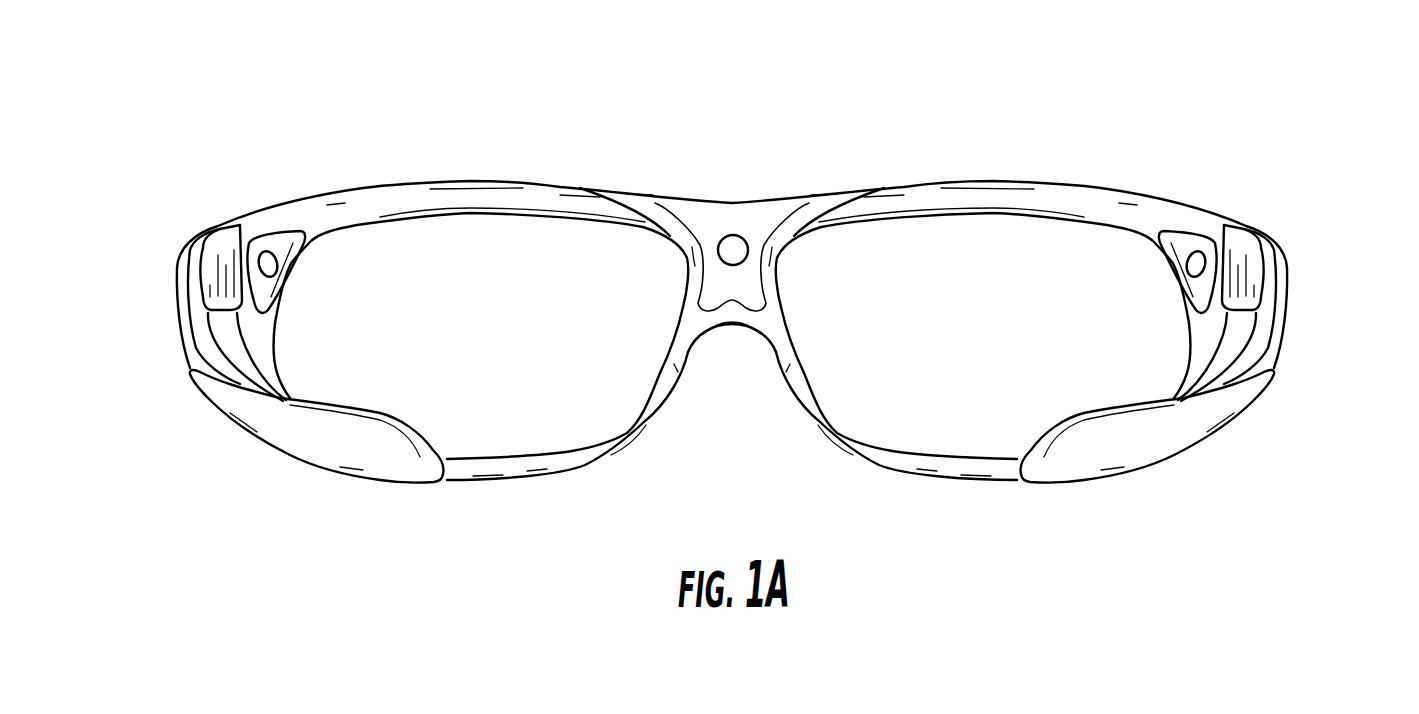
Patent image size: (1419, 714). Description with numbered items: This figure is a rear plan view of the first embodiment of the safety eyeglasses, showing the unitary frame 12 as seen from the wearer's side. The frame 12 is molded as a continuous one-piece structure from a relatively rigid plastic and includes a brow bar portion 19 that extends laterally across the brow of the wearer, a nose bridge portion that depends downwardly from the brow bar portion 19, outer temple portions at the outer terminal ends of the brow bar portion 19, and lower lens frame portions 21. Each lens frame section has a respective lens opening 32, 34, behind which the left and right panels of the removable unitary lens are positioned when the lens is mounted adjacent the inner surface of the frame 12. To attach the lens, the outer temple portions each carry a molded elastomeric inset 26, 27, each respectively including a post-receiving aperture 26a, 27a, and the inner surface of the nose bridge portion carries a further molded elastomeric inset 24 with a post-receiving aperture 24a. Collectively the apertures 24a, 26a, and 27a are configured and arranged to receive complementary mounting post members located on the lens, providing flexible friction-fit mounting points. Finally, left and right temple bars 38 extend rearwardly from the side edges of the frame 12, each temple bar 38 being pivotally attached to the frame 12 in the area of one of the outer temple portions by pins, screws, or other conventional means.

The unitary frame 12 is at (734, 306).
The brow bar portion 19 is at (1040, 190).
The lower lens frame portions 21 is at (518, 465).
The elastomeric inset 24 is at (742, 208).
The post-receiving aperture 24a is at (728, 245).
The elastomeric inset 26 is at (1258, 202).
The post-receiving aperture 26a is at (1197, 258).
The elastomeric inset 27 is at (204, 202).
The post-receiving aperture 27a is at (267, 257).
The lens opening 32 is at (480, 253).
The lens opening 34 is at (922, 252).
The temple bars 38 is at (190, 282).